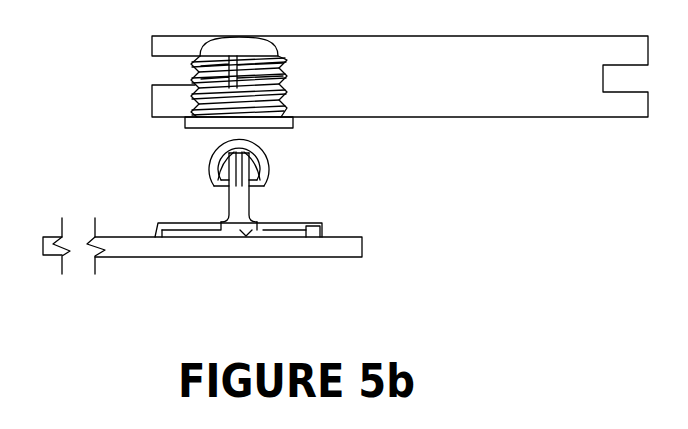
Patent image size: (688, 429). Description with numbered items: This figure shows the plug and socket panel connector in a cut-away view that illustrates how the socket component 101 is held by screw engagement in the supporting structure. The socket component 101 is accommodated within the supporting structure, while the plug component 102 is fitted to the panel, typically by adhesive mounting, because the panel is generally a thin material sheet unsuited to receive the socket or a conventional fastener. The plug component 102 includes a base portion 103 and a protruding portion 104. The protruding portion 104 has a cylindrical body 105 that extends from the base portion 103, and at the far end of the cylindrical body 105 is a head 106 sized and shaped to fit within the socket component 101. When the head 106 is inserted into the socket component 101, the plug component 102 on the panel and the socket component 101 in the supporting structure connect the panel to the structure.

The socket component 101 is at (195, 77).
The plug component 102 is at (155, 223).
The base portion 103 is at (322, 223).
The protruding portion 104 is at (242, 180).
The cylindrical body 105 is at (228, 207).
The head 106 is at (212, 162).